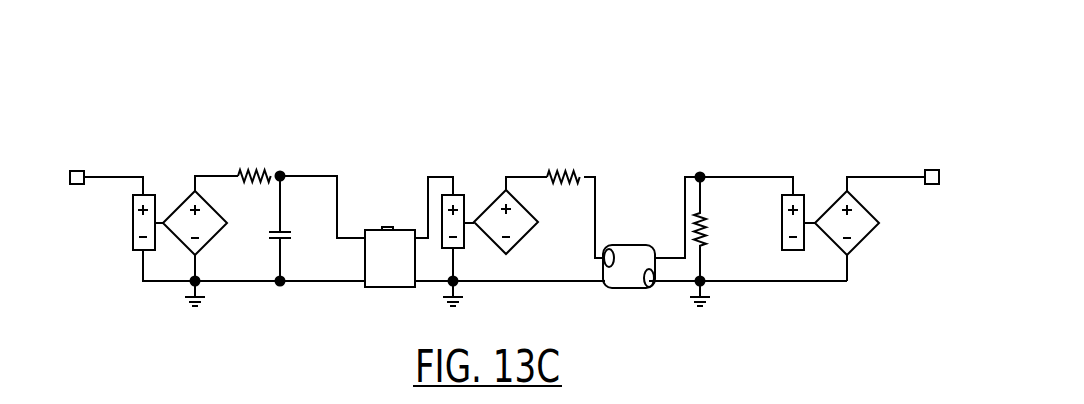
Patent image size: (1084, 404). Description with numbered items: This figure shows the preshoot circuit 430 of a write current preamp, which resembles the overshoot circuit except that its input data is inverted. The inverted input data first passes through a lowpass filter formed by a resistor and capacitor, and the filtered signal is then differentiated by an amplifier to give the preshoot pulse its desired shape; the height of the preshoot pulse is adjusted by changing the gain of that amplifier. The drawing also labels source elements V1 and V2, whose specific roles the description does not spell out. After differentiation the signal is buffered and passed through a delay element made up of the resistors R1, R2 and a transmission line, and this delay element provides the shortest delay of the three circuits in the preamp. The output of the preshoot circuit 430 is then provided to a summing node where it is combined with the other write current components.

The preshoot circuit 430 is at (494, 185).
The voltage-controlled voltage source V1 is at (214, 225).
The voltage-controlled voltage source V2 is at (524, 225).
The resistor R1 is at (558, 181).
The resistor R2 is at (736, 229).